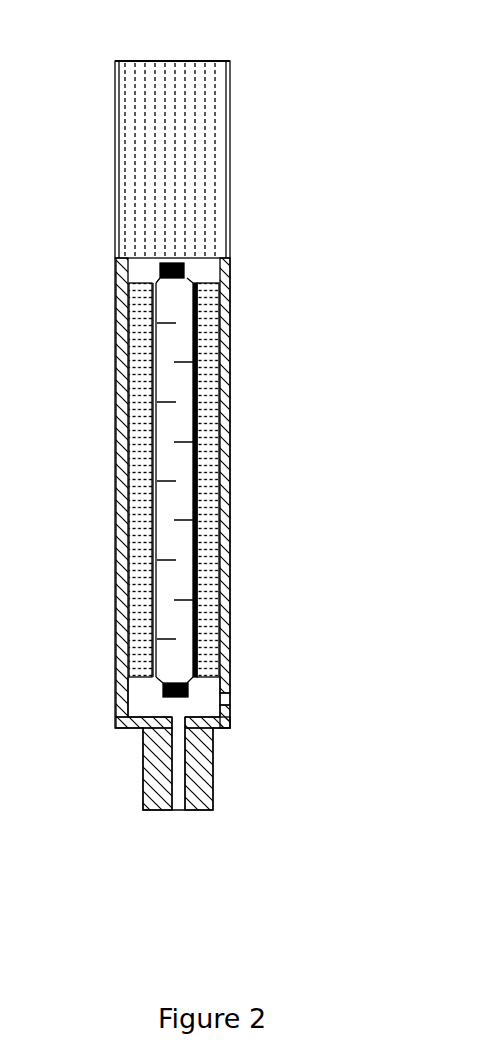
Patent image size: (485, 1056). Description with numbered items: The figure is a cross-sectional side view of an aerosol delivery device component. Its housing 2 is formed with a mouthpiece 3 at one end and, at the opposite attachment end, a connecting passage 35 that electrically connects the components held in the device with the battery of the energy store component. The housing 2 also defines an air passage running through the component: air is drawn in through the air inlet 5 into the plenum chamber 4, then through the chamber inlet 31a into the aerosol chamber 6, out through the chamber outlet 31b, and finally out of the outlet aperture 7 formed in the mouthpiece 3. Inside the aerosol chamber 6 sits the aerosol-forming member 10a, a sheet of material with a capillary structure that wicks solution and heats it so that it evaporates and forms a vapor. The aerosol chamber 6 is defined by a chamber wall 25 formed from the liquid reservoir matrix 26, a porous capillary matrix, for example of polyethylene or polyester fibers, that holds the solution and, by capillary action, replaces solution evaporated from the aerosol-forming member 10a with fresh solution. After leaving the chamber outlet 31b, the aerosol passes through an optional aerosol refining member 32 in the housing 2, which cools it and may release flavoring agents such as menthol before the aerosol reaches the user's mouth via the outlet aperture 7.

The housing 2 is at (226, 470).
The mouthpiece 3 is at (228, 120).
The plenum chamber 4 is at (203, 697).
The air inlet 5 is at (231, 698).
The aerosol chamber 6 is at (175, 430).
The outlet aperture 7 is at (178, 62).
The aerosol-forming member 10a is at (160, 458).
The chamber wall 25 is at (140, 628).
The liquid reservoir matrix 26 is at (210, 350).
The chamber inlet 31a is at (180, 677).
The chamber outlet 31b is at (178, 277).
The aerosol refining member 32 is at (205, 186).
The connecting passage 35 is at (178, 772).